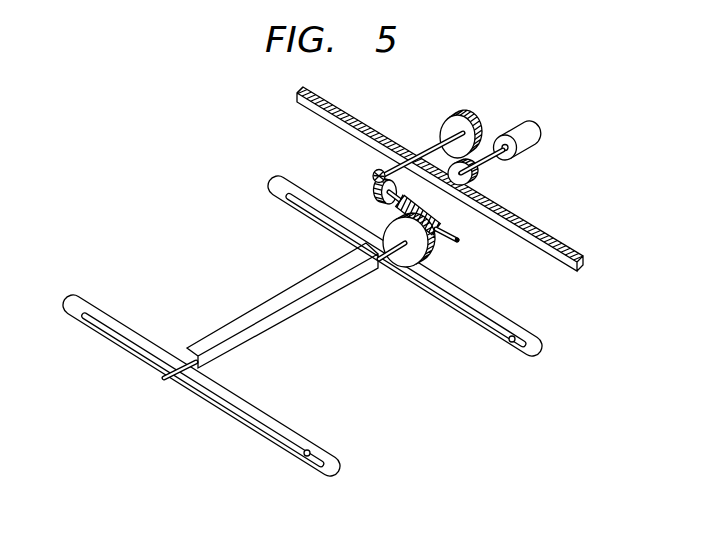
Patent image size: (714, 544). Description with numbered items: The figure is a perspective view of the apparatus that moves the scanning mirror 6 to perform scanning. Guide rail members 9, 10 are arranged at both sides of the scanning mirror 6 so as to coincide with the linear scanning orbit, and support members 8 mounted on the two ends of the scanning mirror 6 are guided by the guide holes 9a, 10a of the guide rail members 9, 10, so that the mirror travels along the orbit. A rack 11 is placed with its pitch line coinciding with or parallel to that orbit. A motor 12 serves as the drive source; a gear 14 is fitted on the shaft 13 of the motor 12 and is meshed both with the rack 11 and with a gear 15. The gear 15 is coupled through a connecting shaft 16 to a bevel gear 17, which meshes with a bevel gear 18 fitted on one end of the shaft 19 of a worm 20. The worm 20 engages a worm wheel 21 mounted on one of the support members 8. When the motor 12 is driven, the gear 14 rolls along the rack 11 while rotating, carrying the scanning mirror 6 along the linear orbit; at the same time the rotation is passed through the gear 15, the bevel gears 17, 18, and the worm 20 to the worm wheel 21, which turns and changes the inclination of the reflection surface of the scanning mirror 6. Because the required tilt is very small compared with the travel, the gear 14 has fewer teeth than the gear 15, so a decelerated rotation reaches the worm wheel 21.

The scanning mirror 6 is at (252, 307).
The support member 8 is at (168, 383).
The guide rail member 9 is at (80, 297).
The guide hole 9a is at (307, 456).
The guide rail member 10 is at (270, 184).
The guide hole 10a is at (512, 341).
The rack 11 is at (564, 250).
The motor 12 is at (540, 131).
The shaft 13 is at (498, 162).
The gear 14 is at (477, 177).
The gear 15 is at (473, 116).
The connecting shaft 16 is at (427, 143).
The bevel gear 17 is at (374, 176).
The bevel gear 18 is at (372, 192).
The shaft 19 is at (403, 200).
The worm 20 is at (436, 220).
The worm wheel 21 is at (437, 258).